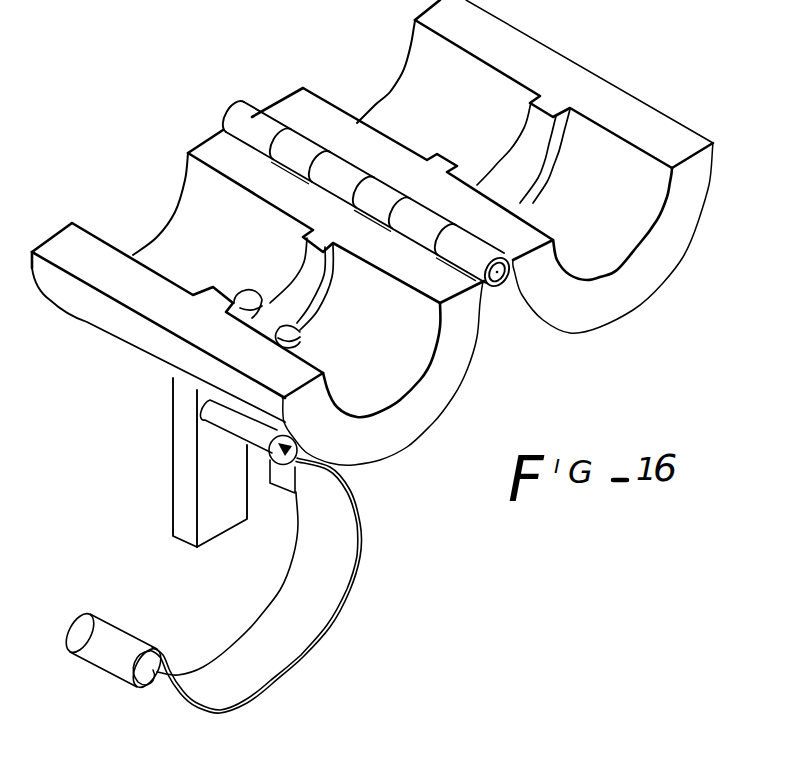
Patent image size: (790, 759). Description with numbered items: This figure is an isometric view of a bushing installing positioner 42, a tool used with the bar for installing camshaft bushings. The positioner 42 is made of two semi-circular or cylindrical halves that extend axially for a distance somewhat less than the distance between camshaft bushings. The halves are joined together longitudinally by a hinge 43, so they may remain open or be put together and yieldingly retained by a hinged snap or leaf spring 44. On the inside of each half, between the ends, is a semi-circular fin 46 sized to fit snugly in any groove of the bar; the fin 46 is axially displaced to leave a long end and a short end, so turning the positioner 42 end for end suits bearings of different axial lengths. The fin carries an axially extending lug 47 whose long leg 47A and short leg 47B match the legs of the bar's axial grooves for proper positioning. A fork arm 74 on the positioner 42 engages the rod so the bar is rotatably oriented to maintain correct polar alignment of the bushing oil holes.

The bushing positioner 42 is at (400, 453).
The hinge 43 is at (497, 287).
The leaf spring 44 is at (304, 641).
The semi-circular fin 46 is at (537, 181).
The lug 47 is at (235, 281).
The long leg 47A is at (259, 292).
The short leg 47B is at (302, 337).
The fork arm 74 is at (174, 519).